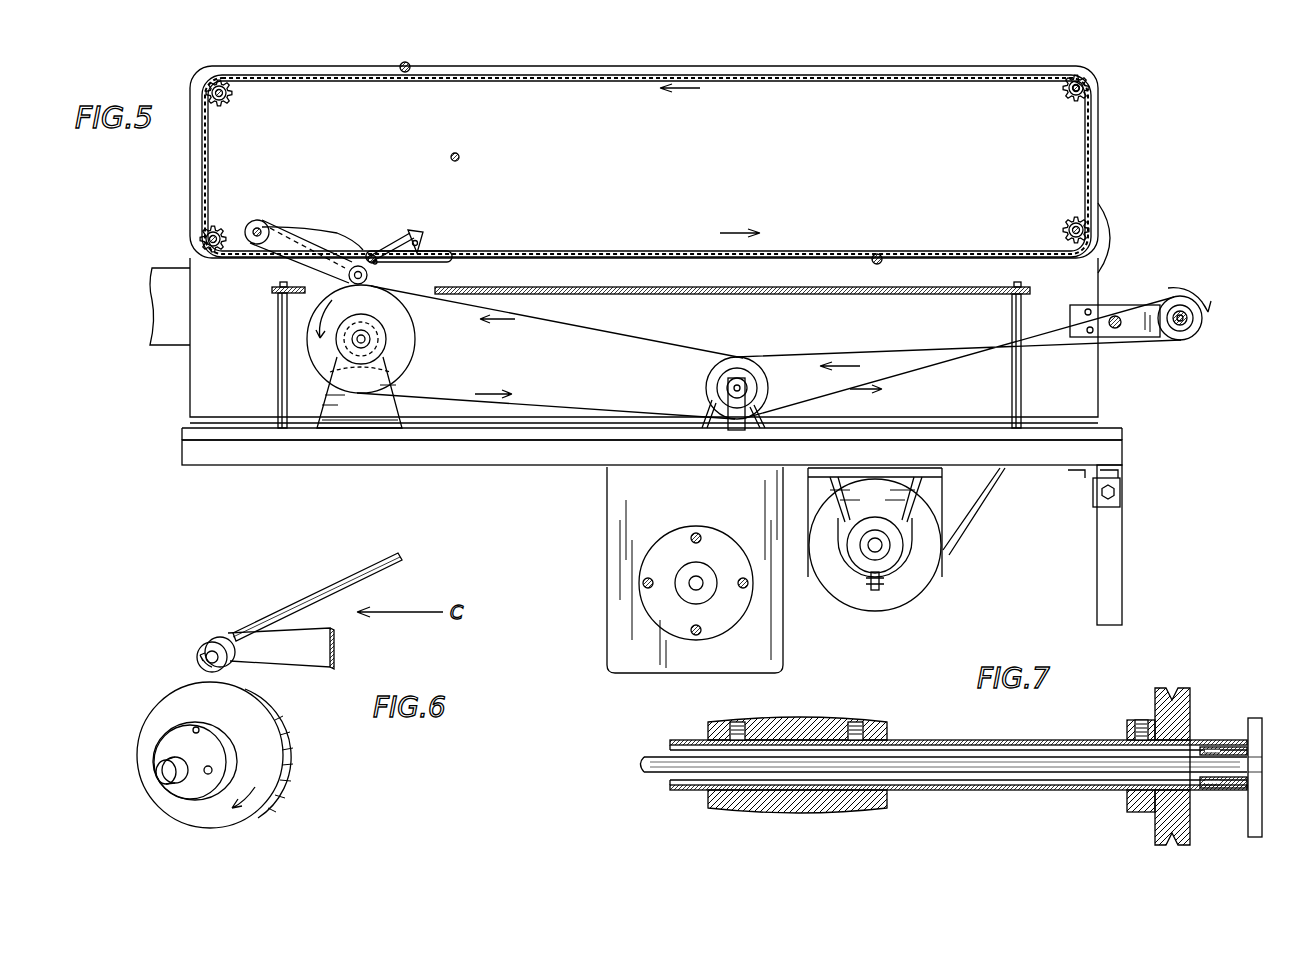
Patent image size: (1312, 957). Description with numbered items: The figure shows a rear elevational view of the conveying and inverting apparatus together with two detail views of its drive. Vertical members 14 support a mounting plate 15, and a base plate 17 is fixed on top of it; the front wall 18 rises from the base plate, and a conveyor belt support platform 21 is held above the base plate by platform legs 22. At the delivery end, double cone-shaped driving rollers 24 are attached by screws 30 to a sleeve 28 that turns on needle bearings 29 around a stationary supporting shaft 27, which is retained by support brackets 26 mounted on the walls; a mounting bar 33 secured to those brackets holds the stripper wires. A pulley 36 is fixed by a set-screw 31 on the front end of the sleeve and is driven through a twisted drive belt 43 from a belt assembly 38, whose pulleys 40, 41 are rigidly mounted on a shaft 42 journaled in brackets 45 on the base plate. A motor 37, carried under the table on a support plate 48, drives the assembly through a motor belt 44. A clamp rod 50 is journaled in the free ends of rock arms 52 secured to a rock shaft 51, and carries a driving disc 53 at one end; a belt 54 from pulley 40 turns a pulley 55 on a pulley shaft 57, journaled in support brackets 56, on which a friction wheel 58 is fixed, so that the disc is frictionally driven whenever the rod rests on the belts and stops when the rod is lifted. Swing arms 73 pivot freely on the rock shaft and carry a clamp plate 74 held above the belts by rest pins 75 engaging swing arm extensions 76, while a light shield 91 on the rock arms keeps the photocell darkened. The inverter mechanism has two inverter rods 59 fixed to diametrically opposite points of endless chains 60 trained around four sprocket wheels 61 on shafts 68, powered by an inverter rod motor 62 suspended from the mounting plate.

In FIG. 5, the vertical members 14 is at (1122, 561).
In FIG. 5, the mounting plate 15 is at (283, 452).
In FIG. 5, the base plate 17 is at (482, 443).
In FIG. 5, the front wall 18 is at (465, 137).
In FIG. 5, the conveyor belt support platform 21 is at (700, 288).
In FIG. 5, the platform legs 22 is at (278, 352).
In FIG. 7, the driving rollers 24 is at (800, 722).
In FIG. 5, the support brackets 26 is at (1163, 305).
In FIG. 7, the support brackets 26 is at (1248, 818).
In FIG. 7, the supporting shaft 27 is at (1008, 752).
In FIG. 7, the sleeve 28 is at (940, 740).
In FIG. 7, the needle bearings 29 is at (1220, 745).
In FIG. 7, the screws 30 is at (737, 722).
In FIG. 7, the set-screw 31 is at (1135, 720).
In FIG. 5, the mounting bar 33 is at (1118, 310).
In FIG. 5, the pulley 36 is at (1203, 323).
In FIG. 7, the pulley 36 is at (1155, 826).
In FIG. 5, the motor 37 is at (676, 613).
In FIG. 5, the belt assembly 38 is at (731, 343).
In FIG. 5, the pulley 40 is at (760, 368).
In FIG. 5, the pulley 41 is at (716, 384).
In FIG. 5, the shaft 42 is at (742, 375).
In FIG. 5, the drive belt 43 is at (1145, 343).
In FIG. 5, the motor belt 44 is at (705, 420).
In FIG. 5, the brackets 45 is at (735, 425).
In FIG. 5, the support plate 48 is at (760, 655).
In FIG. 5, the clamp rod 50 is at (368, 272).
In FIG. 6, the clamp rod 50 is at (360, 572).
In FIG. 5, the rock shaft 51 is at (259, 228).
In FIG. 5, the rock arms 52 is at (306, 250).
In FIG. 6, the rock arms 52 is at (332, 650).
In FIG. 5, the driving disc 53 is at (348, 282).
In FIG. 6, the driving disc 53 is at (205, 645).
In FIG. 5, the belt 54 is at (580, 339).
In FIG. 5, the pulley 55 is at (388, 350).
In FIG. 5, the support brackets 56 is at (378, 415).
In FIG. 5, the pulley shaft 57 is at (366, 342).
In FIG. 5, the friction wheel 58 is at (384, 308).
In FIG. 6, the friction wheel 58 is at (285, 748).
In FIG. 5, the inverter rods 59 is at (407, 61).
In FIG. 5, the endless chains 60 is at (585, 66).
In FIG. 5, the sprocket wheels 61 is at (228, 226).
In FIG. 5, the inverter rod motor 62 is at (919, 588).
In FIG. 5, the shafts 68 is at (1064, 98).
In FIG. 5, the swing arms 73 is at (345, 241).
In FIG. 5, the clamp plate 74 is at (470, 255).
In FIG. 5, the rest pins 75 is at (378, 260).
In FIG. 5, the swing arm extensions 76 is at (402, 236).
In FIG. 5, the light shield 91 is at (370, 254).